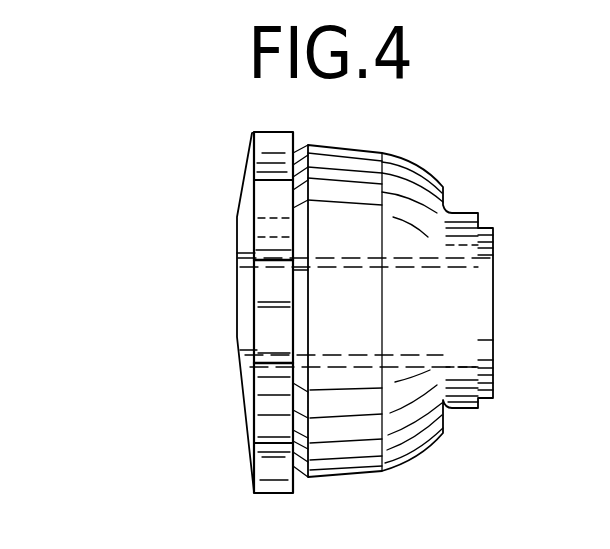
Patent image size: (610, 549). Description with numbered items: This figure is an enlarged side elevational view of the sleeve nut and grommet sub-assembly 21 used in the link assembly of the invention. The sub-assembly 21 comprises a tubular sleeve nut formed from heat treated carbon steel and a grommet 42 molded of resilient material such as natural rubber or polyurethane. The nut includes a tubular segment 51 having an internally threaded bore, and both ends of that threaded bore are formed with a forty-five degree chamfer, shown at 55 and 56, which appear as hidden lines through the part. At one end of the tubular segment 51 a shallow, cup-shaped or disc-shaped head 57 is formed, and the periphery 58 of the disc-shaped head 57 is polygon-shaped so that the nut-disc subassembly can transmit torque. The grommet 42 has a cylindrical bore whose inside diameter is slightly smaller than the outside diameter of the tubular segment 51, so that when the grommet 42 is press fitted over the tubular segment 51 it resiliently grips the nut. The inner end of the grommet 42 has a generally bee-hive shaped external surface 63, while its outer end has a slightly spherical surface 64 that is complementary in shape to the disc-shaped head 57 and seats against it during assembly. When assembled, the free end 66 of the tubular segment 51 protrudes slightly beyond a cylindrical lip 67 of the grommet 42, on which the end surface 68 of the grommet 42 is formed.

The sleeve nut and grommet sub-assembly 21 is at (350, 125).
The grommet 42 is at (370, 200).
The tubular segment 51 is at (368, 358).
The chamfer 55 is at (495, 258).
The chamfer 56 is at (243, 355).
The disc-shaped head 57 is at (260, 323).
The periphery 58 is at (266, 452).
The bee-hive shape external surface 63 is at (402, 463).
The spherical surface 64 is at (294, 290).
The free end 66 is at (493, 230).
The cylindrical lip 67 is at (462, 410).
The end surface 68 is at (480, 340).